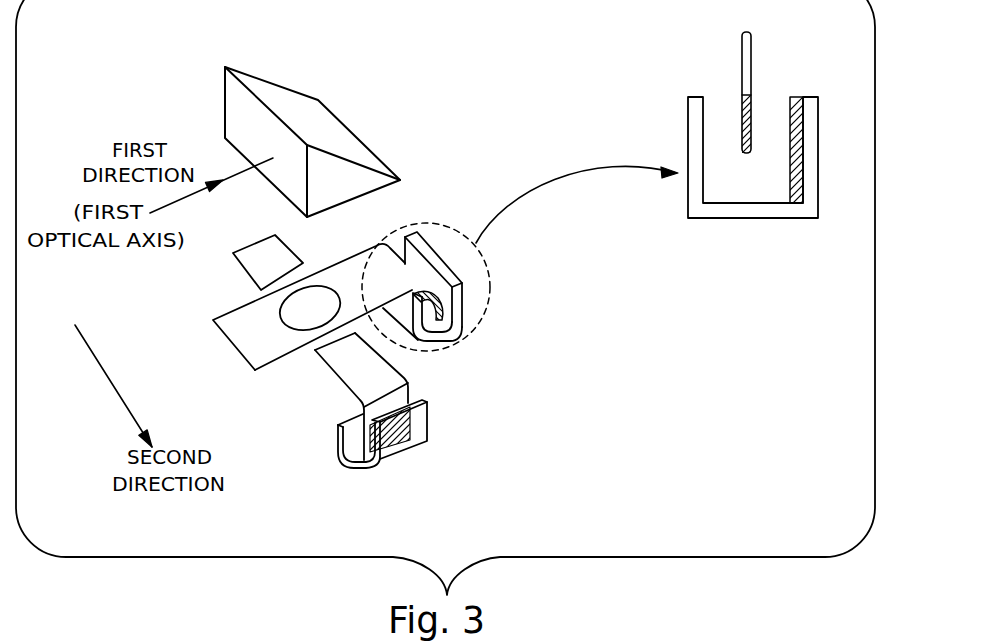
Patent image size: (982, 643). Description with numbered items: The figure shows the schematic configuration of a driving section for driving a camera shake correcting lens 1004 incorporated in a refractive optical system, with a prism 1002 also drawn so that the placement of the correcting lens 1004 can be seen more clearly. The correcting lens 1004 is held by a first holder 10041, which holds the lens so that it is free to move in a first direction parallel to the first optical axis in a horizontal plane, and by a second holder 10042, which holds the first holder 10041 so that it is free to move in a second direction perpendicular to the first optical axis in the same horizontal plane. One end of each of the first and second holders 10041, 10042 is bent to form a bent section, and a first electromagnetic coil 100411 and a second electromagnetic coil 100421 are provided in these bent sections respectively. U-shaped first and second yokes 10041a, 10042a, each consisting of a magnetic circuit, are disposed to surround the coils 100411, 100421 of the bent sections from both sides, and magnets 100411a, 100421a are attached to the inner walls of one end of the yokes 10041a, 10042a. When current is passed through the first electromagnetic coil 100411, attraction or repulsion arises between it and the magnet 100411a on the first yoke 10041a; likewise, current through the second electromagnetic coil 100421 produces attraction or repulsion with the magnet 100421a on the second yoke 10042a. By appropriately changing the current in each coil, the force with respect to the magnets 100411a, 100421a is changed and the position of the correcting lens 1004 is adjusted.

The prism 1002 is at (321, 130).
The camera shake correcting lens 1004 is at (310, 308).
The first holder 10041 is at (250, 334).
The second holder 10042 is at (373, 375).
The first yoke 10041a is at (463, 313).
The second yoke 10042a is at (408, 440).
The first electromagnetic coil 100411 is at (440, 334).
The second electromagnetic coil 100421 is at (356, 468).
The magnet 100411a is at (792, 175).
The magnet 100421a is at (742, 211).